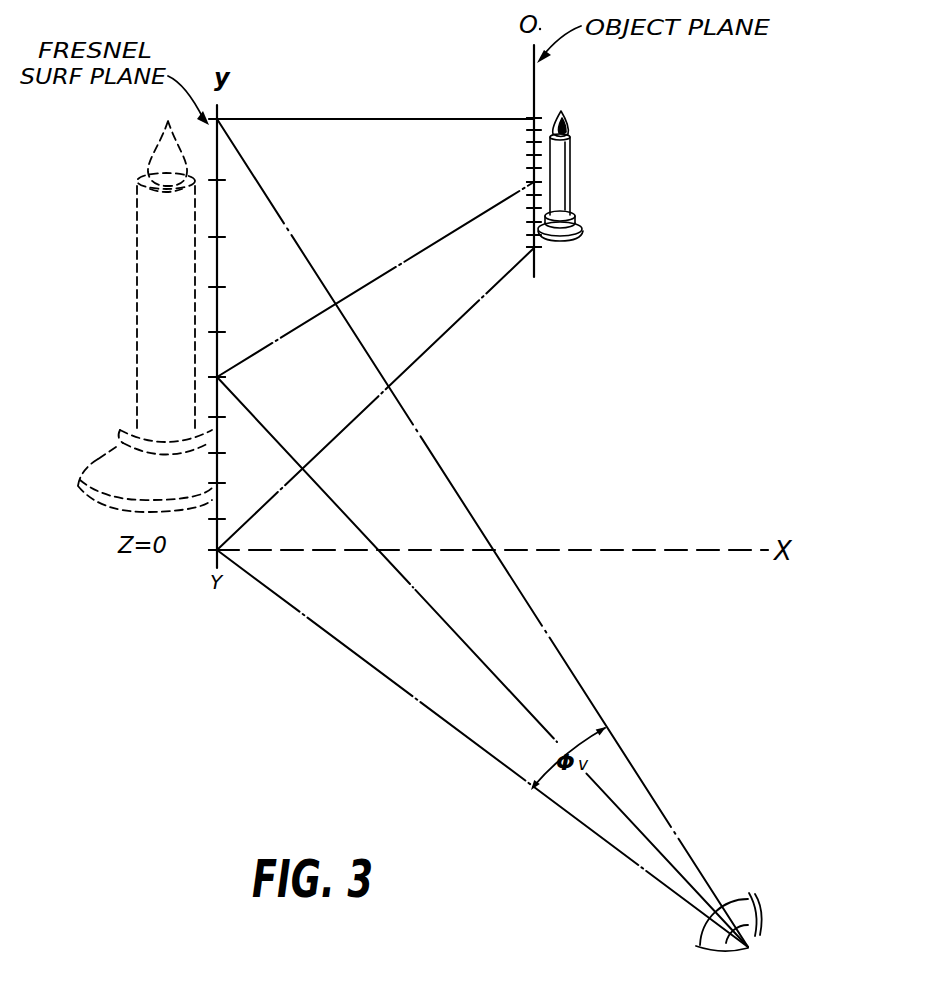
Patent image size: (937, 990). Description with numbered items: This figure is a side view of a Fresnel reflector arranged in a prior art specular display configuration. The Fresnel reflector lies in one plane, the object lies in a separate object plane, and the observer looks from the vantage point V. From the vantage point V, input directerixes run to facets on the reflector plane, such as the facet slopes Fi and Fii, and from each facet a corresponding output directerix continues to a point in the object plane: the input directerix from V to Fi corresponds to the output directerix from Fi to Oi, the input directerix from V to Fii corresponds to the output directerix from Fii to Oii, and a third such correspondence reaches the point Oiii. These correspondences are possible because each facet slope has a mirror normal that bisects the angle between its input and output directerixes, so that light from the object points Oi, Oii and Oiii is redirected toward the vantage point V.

The vantage point V is at (779, 935).
The facet slope Fi is at (245, 534).
The facet slope Fii is at (246, 378).
The object plane point Oi is at (515, 242).
The object plane point Oii is at (509, 170).
The object plane point Oiii is at (558, 100).